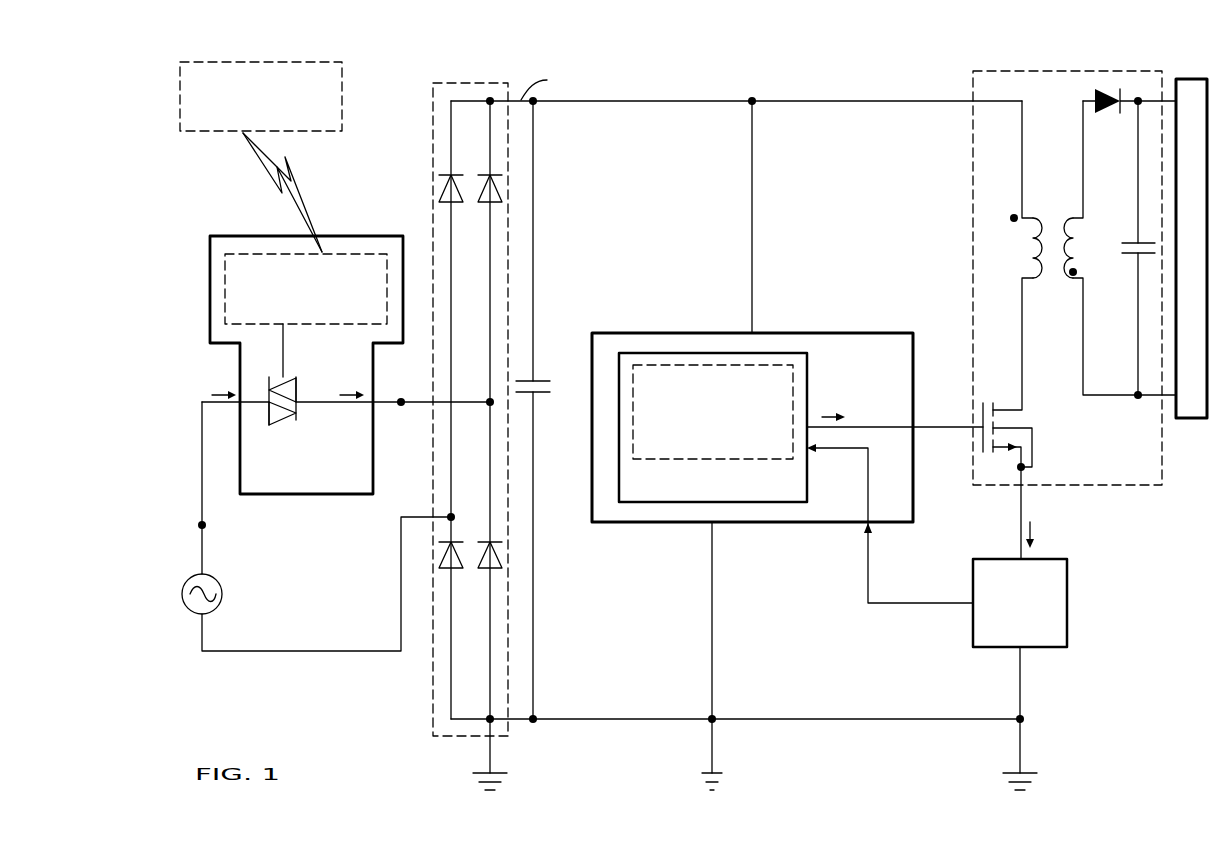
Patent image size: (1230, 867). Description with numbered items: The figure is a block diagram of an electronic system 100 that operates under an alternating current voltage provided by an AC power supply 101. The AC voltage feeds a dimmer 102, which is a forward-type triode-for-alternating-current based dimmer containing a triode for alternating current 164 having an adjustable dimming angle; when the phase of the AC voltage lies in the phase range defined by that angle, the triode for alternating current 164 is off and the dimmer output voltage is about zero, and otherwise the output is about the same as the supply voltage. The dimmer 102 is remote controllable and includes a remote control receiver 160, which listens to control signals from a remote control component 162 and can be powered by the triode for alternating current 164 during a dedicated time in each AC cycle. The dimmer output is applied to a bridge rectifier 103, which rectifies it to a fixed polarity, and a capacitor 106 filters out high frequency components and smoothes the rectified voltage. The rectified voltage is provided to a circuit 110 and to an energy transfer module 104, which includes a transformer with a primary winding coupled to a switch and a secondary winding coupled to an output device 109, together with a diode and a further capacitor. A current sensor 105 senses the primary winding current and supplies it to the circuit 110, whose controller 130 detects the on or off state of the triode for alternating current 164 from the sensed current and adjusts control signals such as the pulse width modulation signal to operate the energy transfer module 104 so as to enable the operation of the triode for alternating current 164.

The electronic system 100 is at (1130, 689).
The AC power supply 101 is at (212, 611).
The dimmer 102 is at (306, 365).
The bridge rectifier 103 is at (434, 112).
The energy transfer module 104 is at (973, 90).
The current sensor 105 is at (1020, 603).
The capacitor 106 is at (538, 380).
The output device 109 is at (1191, 248).
The circuit 110 is at (915, 500).
The controller 130 is at (713, 427).
The remote control receiver 160 is at (306, 289).
The remote control component 162 is at (261, 157).
The TRIAC 164 is at (268, 391).